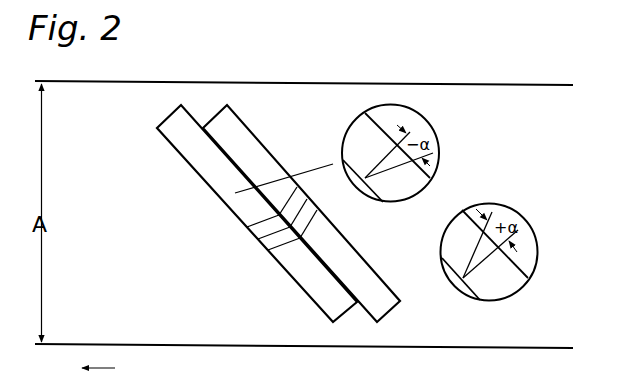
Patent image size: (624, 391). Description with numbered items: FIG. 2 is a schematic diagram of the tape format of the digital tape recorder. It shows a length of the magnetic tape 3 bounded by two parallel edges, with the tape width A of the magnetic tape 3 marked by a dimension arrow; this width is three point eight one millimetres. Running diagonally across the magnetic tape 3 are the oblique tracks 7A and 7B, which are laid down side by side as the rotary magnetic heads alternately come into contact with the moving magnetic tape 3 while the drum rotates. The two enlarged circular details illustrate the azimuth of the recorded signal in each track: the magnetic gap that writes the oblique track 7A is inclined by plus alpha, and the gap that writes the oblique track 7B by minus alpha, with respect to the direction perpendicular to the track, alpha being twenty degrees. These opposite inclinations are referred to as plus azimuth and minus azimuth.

The magnetic tape 3 is at (183, 334).
The oblique track 7A is at (210, 180).
The oblique track 7B is at (256, 138).